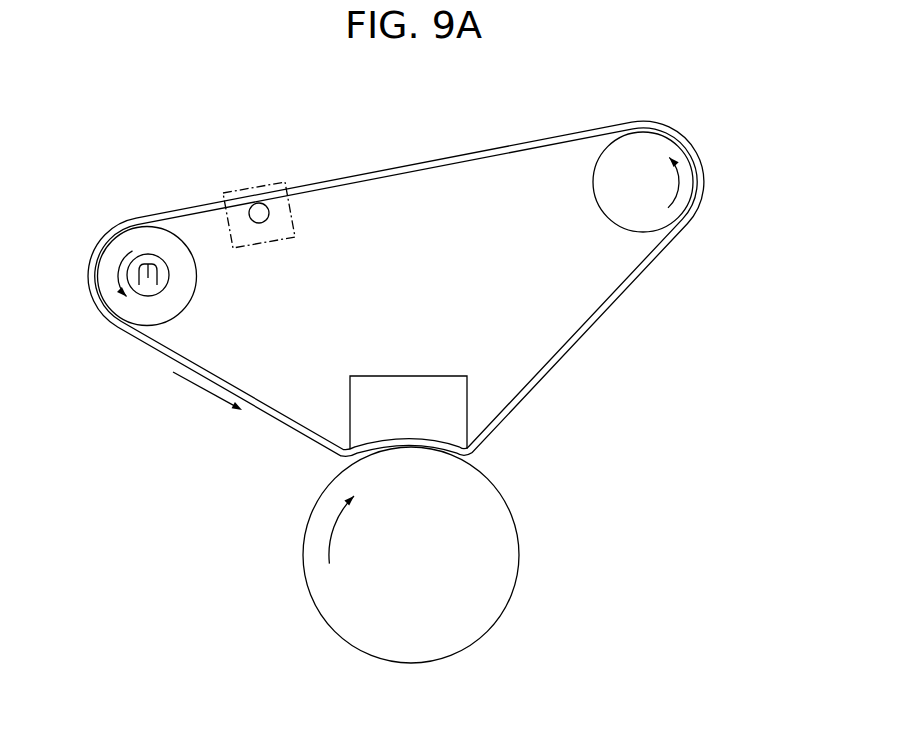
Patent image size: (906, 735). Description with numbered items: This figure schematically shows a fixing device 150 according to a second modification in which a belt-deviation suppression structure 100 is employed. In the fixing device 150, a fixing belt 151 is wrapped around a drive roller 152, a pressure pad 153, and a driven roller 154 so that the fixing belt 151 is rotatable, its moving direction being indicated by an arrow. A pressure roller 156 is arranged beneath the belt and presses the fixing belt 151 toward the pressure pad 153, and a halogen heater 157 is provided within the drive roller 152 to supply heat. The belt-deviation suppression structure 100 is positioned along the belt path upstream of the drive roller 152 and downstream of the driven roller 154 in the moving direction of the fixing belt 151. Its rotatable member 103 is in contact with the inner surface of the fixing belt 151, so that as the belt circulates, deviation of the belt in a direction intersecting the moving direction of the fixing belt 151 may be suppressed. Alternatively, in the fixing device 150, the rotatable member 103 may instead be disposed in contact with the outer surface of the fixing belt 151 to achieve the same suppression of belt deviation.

The belt-deviation suppression structure 100 is at (303, 215).
The rotatable member 103 is at (260, 224).
The fixing device 150 is at (725, 122).
The fixing belt 151 is at (460, 156).
The drive roller 152 is at (194, 299).
The pressure pad 153 is at (405, 387).
The driven roller 154 is at (594, 193).
The pressure roller 156 is at (521, 535).
The halogen heater 157 is at (170, 275).